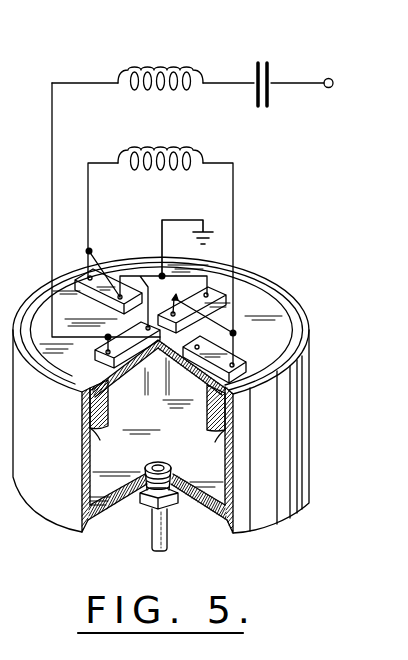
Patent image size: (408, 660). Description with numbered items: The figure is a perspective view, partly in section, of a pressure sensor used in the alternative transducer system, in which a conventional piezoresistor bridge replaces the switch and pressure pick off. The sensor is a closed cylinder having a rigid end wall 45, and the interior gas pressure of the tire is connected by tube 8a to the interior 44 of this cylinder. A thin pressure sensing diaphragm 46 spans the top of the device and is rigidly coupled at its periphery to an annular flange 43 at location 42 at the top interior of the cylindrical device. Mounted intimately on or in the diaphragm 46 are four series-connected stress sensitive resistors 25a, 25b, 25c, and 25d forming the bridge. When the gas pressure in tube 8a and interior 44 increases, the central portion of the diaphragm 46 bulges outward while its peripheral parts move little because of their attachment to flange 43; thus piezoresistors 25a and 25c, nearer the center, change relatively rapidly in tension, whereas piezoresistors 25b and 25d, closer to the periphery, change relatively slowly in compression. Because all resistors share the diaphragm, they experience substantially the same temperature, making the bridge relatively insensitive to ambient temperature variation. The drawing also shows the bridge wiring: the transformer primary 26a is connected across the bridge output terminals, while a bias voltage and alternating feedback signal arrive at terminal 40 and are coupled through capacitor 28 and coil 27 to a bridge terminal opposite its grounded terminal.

The coil 27 is at (165, 70).
The capacitor 28 is at (258, 62).
The terminal 40 is at (333, 80).
The primary 26a is at (170, 150).
The stress sensitive resistor 25a is at (80, 392).
The stress sensitive resistor 25b is at (250, 358).
The stress sensitive resistor 25c is at (217, 290).
The stress sensitive resistor 25d is at (112, 280).
The pressure sensing diaphragm 46 is at (147, 362).
The location 42 is at (108, 393).
The annular flange 43 is at (98, 425).
The interior 44 is at (201, 450).
The rigid end wall 45 is at (110, 492).
The tube 8a is at (168, 528).